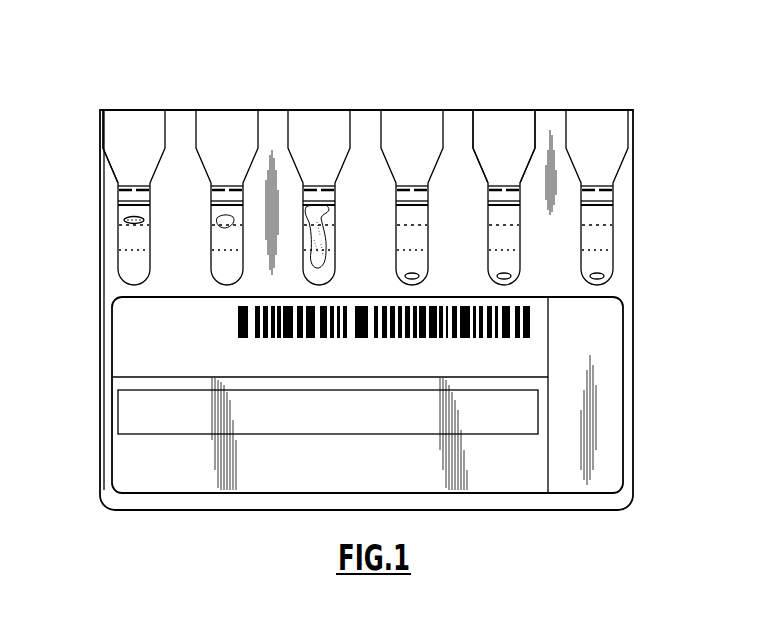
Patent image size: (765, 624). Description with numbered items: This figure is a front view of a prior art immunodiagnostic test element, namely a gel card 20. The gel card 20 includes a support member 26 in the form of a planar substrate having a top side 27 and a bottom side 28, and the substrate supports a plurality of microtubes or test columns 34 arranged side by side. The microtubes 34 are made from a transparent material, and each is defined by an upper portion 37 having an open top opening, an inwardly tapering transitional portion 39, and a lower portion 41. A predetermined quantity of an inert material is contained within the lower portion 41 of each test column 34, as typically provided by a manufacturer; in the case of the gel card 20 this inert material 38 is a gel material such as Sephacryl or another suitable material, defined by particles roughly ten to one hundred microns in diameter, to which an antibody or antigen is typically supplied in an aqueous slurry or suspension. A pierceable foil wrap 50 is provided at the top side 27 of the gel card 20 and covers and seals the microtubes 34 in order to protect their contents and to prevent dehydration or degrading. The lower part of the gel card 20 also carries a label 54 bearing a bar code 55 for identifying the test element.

The gel card 20 is at (212, 76).
The support member 26 is at (100, 233).
The top side 27 is at (178, 110).
The bottom side 28 is at (232, 510).
The microtubes 34 is at (108, 136).
The upper portion 37 is at (485, 130).
The gel material 38 is at (603, 240).
The inwardly tapering transitional portion 39 is at (110, 170).
The lower portion 41 is at (133, 265).
The foil wrap 50 is at (112, 110).
The label 54 is at (130, 457).
The bar code 55 is at (238, 320).